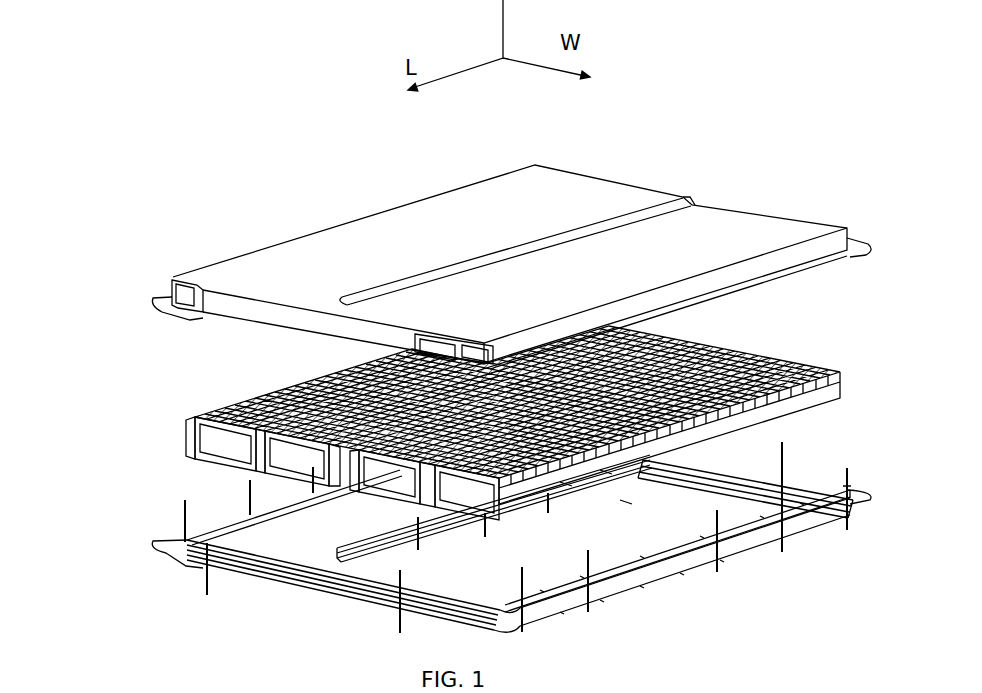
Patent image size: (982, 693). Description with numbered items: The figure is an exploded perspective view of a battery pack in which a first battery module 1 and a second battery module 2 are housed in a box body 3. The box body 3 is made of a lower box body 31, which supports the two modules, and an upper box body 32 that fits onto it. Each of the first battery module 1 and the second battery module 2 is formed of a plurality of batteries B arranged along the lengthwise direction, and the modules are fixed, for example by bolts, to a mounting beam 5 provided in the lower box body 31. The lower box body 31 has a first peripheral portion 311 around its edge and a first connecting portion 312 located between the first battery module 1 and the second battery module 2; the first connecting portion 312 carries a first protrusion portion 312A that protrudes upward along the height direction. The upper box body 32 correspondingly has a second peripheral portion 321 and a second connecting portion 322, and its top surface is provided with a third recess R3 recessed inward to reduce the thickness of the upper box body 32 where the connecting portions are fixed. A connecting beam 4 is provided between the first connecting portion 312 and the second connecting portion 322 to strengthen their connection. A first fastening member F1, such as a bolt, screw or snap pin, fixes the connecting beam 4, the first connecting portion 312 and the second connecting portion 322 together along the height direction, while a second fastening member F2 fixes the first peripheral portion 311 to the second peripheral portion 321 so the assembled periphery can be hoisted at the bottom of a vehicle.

The first battery module 1 is at (215, 383).
The second battery module 2 is at (825, 333).
The box body 3 is at (177, 78).
The lower box body 31 is at (155, 512).
The upper box body 32 is at (268, 192).
The first peripheral portion 311 is at (152, 543).
The first connecting portion 312 is at (590, 515).
The first protrusion portion 312A is at (535, 515).
The second peripheral portion 321 is at (152, 300).
The second connecting portion 322 is at (692, 187).
The connecting beam 4 is at (358, 528).
The mounting beam 5 is at (265, 546).
The battery B is at (277, 392).
The third recess R3 is at (647, 208).
The first fastening member F1 is at (625, 485).
The second fastening member F2 is at (732, 560).